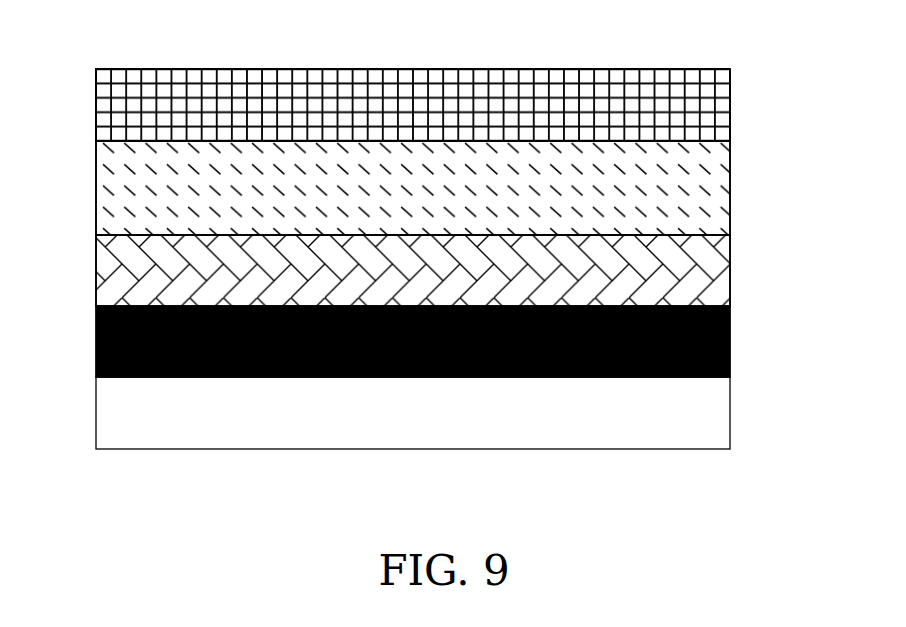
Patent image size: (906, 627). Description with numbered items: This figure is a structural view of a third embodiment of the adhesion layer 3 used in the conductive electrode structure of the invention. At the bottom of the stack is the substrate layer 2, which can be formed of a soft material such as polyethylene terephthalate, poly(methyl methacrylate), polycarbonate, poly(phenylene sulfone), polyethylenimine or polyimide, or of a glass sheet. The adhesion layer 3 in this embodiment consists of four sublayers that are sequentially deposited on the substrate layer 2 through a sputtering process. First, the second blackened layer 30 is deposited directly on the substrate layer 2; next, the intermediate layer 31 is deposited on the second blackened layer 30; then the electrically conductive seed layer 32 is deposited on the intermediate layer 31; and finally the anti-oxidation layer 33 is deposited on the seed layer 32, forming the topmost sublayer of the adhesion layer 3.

The substrate layer 2 is at (293, 437).
The adhesion layer 3 is at (730, 70).
The second blackened layer 30 is at (97, 348).
The intermediate layer 31 is at (100, 262).
The electrically conductive seed layer 32 is at (104, 179).
The anti-oxidation layer 33 is at (375, 80).